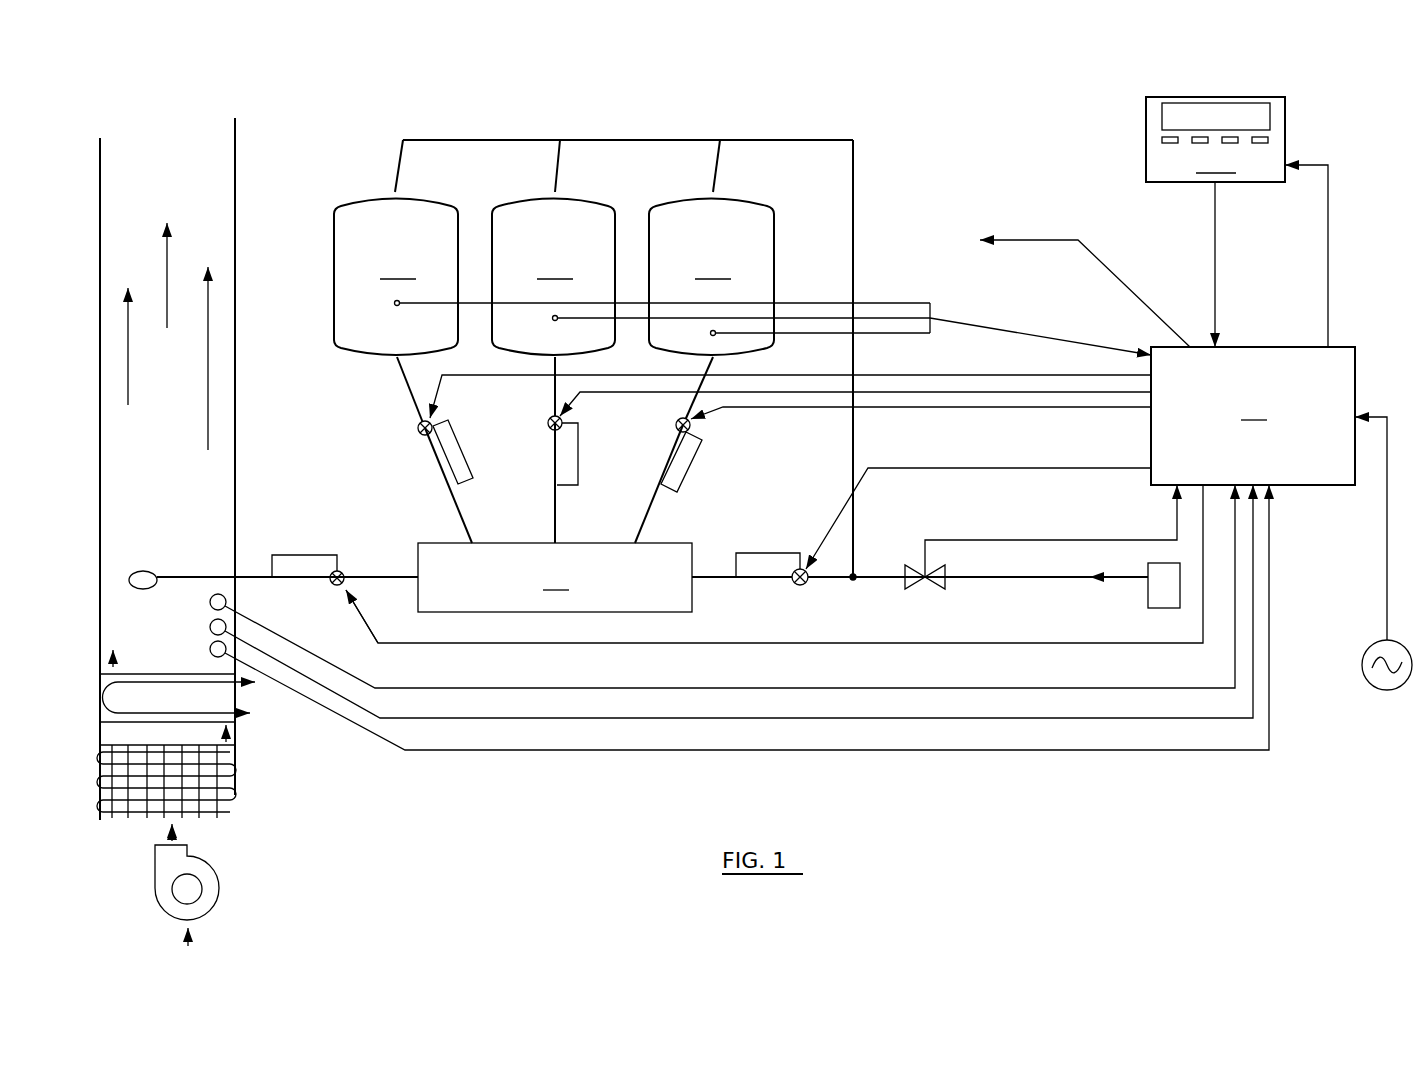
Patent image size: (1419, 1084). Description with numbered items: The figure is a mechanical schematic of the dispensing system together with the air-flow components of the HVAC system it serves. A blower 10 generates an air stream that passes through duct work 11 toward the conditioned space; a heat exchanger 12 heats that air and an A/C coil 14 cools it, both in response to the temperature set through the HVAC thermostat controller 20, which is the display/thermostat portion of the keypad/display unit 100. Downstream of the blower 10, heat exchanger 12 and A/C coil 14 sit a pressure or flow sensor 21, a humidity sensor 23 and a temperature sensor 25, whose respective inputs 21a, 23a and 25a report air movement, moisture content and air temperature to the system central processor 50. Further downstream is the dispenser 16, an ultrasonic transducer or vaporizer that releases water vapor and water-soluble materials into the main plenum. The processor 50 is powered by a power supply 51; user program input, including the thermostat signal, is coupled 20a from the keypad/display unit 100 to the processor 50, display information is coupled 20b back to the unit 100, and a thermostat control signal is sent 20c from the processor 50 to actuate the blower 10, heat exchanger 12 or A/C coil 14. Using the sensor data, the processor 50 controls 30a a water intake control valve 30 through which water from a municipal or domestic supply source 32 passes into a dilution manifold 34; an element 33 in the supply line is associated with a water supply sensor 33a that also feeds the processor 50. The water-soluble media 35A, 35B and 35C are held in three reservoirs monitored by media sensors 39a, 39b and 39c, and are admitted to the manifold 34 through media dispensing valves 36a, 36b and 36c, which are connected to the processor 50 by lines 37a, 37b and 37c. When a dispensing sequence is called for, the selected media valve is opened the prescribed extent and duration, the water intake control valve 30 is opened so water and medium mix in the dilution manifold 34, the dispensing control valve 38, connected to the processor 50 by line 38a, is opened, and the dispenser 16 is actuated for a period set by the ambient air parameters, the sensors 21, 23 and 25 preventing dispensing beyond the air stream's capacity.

The blower 10 is at (214, 876).
The duct work 11 is at (235, 405).
The heat exchanger 12 is at (232, 801).
The A/C coil 14 is at (250, 716).
The dispenser 16 is at (152, 571).
The HVAC thermostat controller 20 is at (1150, 163).
The input coupling 20a is at (1214, 218).
The display information coupling 20b is at (1328, 268).
The thermostat control signal 20c is at (1054, 240).
The pressure or flow sensor 21 is at (210, 649).
The flow sensor input 21a is at (365, 740).
The humidity sensor 23 is at (210, 627).
The humidity sensor input 23a is at (739, 624).
The temperature sensor 25 is at (210, 602).
The temperature sensor input 25a is at (345, 661).
The water intake control valve 30 is at (806, 585).
The valve control 30a is at (1026, 468).
The water supply source 32 is at (1150, 594).
The shutoff valve 33 is at (905, 568).
The water supply sensor 33a is at (1000, 540).
The dilution manifold 34 is at (555, 577).
The medium 35A is at (396, 284).
The medium 35B is at (553, 281).
The medium 35C is at (711, 282).
The media dispensing valve 36a is at (456, 458).
The media dispensing valve 36b is at (568, 485).
The media dispensing valve 36c is at (695, 444).
The valve control line 37a is at (936, 375).
The valve control line 37b is at (907, 392).
The valve control line 37c is at (978, 407).
The dispensing control valve 38 is at (345, 571).
The valve control line 38a is at (722, 643).
The media sensor 39a is at (396, 306).
The media sensor 39b is at (554, 321).
The media sensor 39c is at (711, 333).
The system central processor 50 is at (1253, 416).
The power supply 51 is at (1372, 648).
The keypad/display unit 100 is at (1216, 138).